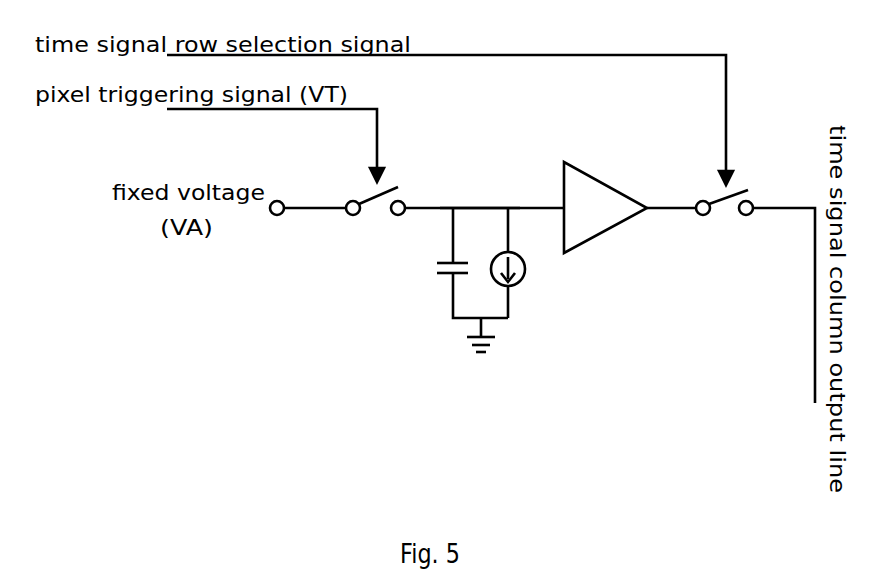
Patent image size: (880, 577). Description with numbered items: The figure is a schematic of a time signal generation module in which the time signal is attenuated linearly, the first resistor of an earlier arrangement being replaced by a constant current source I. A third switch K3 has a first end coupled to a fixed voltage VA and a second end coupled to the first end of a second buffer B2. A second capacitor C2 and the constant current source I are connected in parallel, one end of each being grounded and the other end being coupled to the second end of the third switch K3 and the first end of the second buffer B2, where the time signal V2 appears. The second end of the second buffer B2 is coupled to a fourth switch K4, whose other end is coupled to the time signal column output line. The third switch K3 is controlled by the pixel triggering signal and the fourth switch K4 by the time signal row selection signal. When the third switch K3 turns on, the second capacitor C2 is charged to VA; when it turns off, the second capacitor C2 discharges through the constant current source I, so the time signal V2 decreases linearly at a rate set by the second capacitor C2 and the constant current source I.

The third switch K3 is at (375, 213).
The fourth switch K4 is at (724, 217).
The time signal V2 is at (480, 194).
The second capacitor C2 is at (455, 263).
The constant current source I is at (518, 263).
The second buffer B2 is at (605, 207).